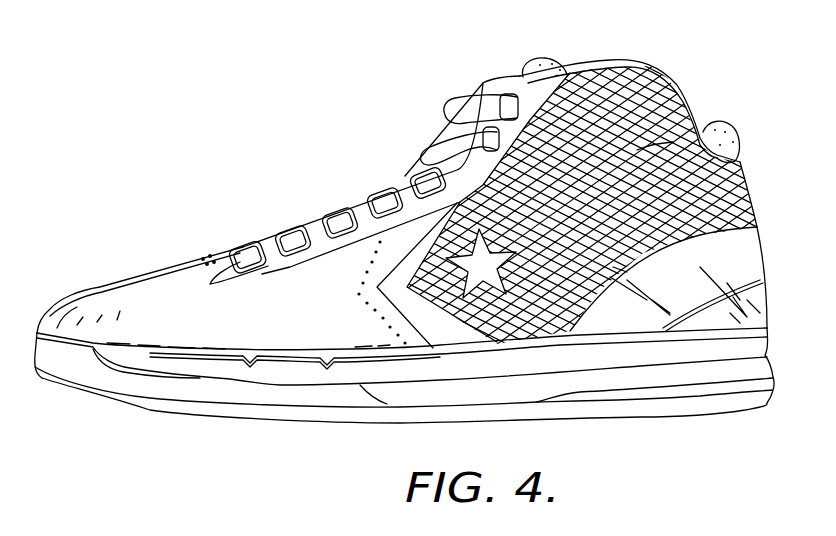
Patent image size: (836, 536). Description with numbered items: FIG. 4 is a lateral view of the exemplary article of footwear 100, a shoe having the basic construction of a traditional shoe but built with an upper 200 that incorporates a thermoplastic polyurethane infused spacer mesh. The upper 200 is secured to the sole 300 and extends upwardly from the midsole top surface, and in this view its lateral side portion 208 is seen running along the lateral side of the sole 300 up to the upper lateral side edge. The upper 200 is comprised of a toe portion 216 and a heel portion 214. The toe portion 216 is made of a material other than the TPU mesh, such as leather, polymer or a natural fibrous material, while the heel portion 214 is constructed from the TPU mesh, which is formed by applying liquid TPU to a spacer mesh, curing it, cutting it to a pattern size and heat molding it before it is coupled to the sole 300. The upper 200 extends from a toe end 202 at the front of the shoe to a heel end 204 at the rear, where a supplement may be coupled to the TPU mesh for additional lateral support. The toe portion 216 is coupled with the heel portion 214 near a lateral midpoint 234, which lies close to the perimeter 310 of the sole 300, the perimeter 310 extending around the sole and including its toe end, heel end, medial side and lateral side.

The article of footwear 100 is at (247, 129).
The upper 200 is at (645, 107).
The toe end 202 is at (48, 312).
The heel end 204 is at (759, 226).
The lateral side portion 208 is at (458, 340).
The heel portion 214 is at (695, 118).
The toe portion 216 is at (310, 322).
The lateral midpoint 234 is at (432, 357).
The sole 300 is at (677, 387).
The perimeter 310 is at (367, 358).